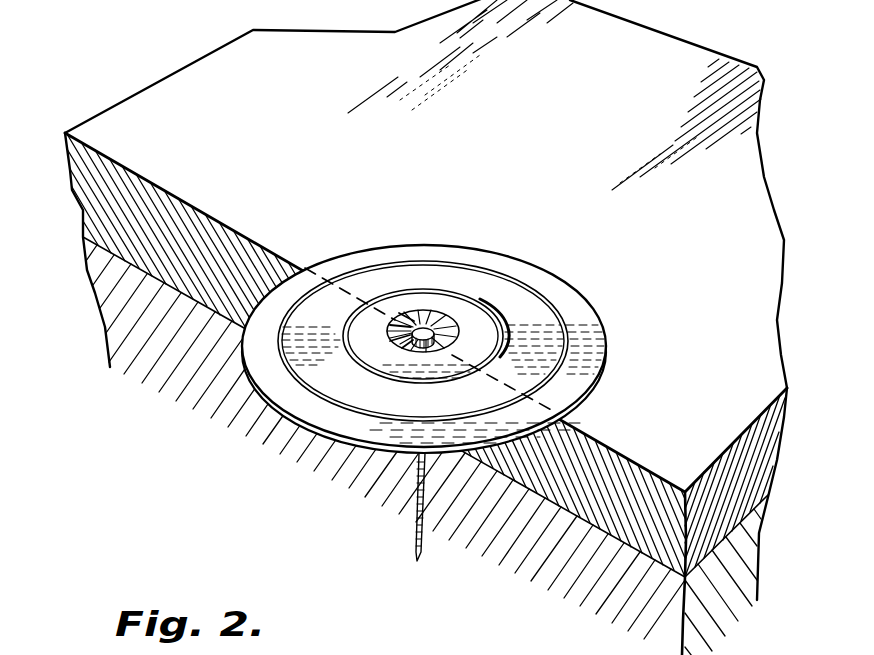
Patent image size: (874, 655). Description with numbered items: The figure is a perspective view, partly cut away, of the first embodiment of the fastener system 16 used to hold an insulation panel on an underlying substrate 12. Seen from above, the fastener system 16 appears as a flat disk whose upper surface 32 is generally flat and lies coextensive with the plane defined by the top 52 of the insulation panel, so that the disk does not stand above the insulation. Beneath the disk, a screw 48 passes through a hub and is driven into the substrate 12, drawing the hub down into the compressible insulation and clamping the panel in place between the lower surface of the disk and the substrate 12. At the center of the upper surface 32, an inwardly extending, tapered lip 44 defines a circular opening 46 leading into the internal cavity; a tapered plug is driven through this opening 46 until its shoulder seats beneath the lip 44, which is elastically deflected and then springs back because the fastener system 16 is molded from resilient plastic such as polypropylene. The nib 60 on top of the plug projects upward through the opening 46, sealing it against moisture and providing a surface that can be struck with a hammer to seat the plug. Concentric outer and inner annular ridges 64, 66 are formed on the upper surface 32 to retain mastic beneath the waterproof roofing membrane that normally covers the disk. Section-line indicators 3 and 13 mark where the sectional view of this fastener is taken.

The substrate 12 is at (472, 581).
The top of insulation panel 52 is at (185, 81).
The section line 3-3 indicator 3 is at (256, 214).
The section line indicator 13 is at (602, 462).
The fastener system 16 is at (450, 383).
The upper surface 32 is at (441, 417).
The outer annular ridge 64 is at (566, 342).
The inner annular ridge 66 is at (499, 336).
The opening 46 is at (440, 338).
The lip 44 is at (410, 313).
The nib 60 is at (424, 331).
The screw 48 is at (413, 527).